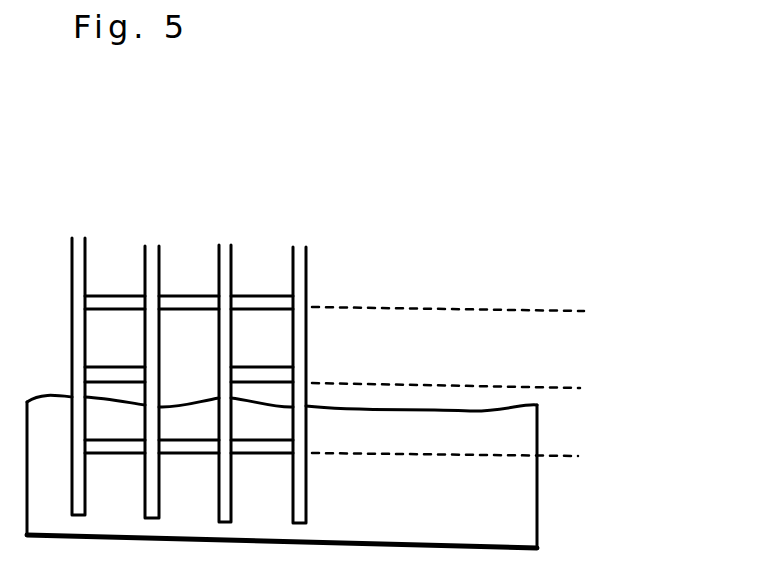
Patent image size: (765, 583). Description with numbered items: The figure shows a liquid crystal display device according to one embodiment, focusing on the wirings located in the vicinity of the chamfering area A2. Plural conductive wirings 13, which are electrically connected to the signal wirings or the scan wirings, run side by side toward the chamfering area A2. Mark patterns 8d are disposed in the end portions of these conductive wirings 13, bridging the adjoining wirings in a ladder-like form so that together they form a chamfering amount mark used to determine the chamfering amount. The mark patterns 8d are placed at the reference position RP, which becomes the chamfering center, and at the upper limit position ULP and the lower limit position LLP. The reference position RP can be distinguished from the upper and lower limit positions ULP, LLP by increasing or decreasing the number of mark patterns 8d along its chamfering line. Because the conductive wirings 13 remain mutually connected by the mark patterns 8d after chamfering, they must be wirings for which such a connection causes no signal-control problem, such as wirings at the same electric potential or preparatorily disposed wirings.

The conductive wirings 13 is at (300, 228).
The mark patterns 8d is at (274, 452).
The chamfering area A2 is at (522, 527).
The upper limit position ULP is at (483, 320).
The reference position RP is at (478, 393).
The lower limit position LLP is at (477, 458).